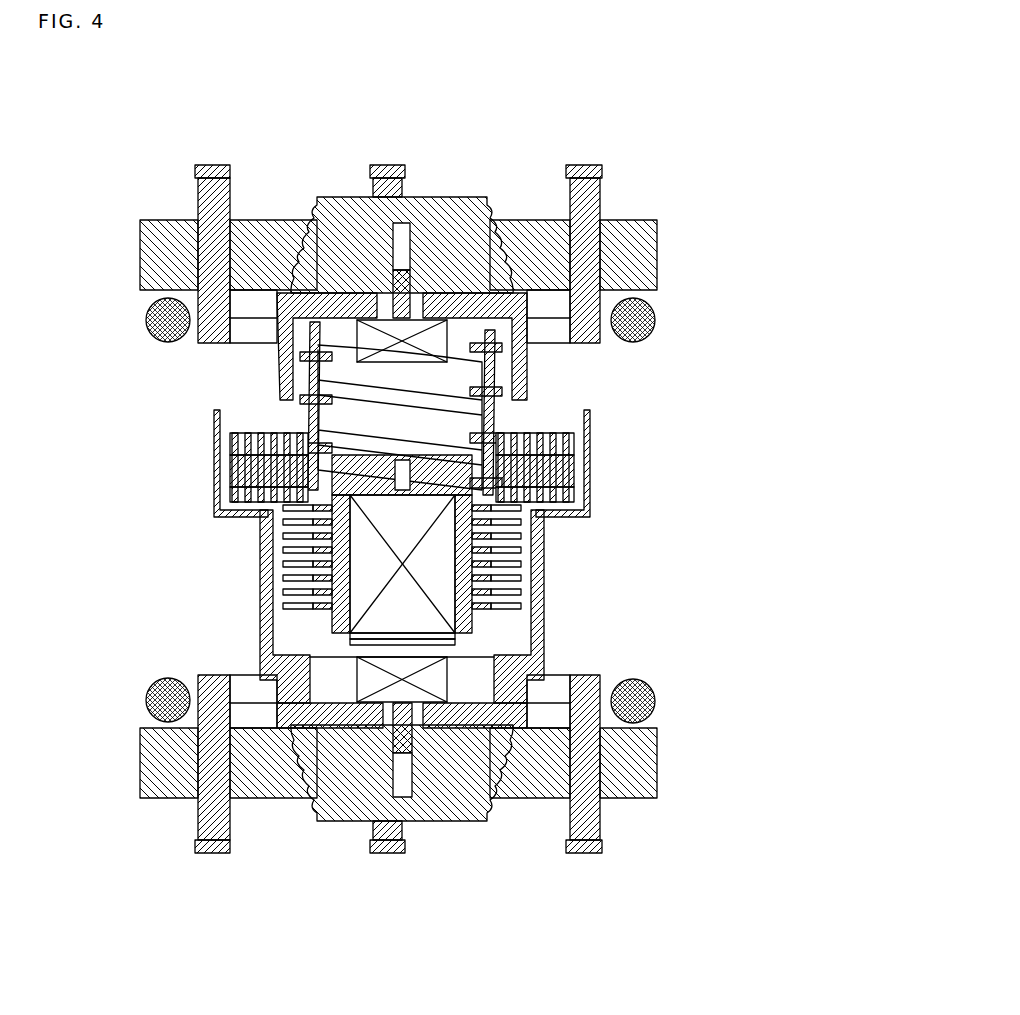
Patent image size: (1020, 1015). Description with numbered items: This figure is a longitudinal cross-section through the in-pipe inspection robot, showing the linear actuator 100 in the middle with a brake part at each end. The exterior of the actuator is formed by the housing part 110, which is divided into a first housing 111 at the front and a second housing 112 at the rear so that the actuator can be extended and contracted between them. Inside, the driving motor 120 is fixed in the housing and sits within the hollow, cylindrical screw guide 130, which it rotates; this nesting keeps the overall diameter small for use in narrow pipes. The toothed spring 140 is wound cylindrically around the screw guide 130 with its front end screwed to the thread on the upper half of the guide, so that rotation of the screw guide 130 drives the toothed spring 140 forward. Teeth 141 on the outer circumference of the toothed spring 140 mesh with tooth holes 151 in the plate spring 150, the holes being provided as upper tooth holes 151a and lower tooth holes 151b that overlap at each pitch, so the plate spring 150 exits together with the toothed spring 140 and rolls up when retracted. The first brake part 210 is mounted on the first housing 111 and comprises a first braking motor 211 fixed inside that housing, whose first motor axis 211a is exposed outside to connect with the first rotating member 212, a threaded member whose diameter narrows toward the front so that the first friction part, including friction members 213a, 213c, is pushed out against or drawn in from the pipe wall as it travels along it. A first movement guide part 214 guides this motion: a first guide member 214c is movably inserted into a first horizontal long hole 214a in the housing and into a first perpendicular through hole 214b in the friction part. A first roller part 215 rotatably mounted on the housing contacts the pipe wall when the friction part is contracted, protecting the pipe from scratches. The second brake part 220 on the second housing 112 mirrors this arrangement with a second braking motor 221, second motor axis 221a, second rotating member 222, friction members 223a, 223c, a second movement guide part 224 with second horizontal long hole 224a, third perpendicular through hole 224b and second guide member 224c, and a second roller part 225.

The linear actuator 100 is at (399, 498).
The housing part 110 is at (405, 498).
The first housing 111 is at (520, 372).
The second housing 112 is at (263, 636).
The driving motor 120 is at (362, 538).
The screw guide 130 is at (542, 535).
The toothed spring 140 is at (318, 394).
The teeth 141 is at (298, 354).
The plate spring 150 is at (399, 445).
The tooth holes 151 is at (399, 445).
The upper tooth holes 151a is at (232, 441).
The lower tooth holes 151b is at (628, 466).
The first brake part 210 is at (408, 205).
The first braking motor 211 is at (315, 372).
The first motor axis 211a is at (406, 255).
The first rotating member 212 is at (345, 196).
The friction member of first friction part 213a is at (140, 257).
The friction member of first friction part 213c is at (658, 270).
The first movement guide part 214 is at (384, 205).
The first horizontal long hole 214a is at (262, 288).
The first perpendicular through hole 214b is at (258, 330).
The first guide member 214c is at (200, 165).
The first roller part 215 is at (146, 320).
The second brake part 220 is at (410, 812).
The second braking motor 221 is at (412, 836).
The second motor axis 221a is at (424, 690).
The second rotating member 222 is at (348, 822).
The fifth friction member 223a is at (140, 768).
The seventh friction member 223c is at (658, 762).
The second movement guide part 224 is at (382, 812).
The second horizontal long hole 224a is at (262, 732).
The third perpendicular through hole 224b is at (258, 690).
The second guide member 224c is at (200, 853).
The second roller part 225 is at (146, 701).